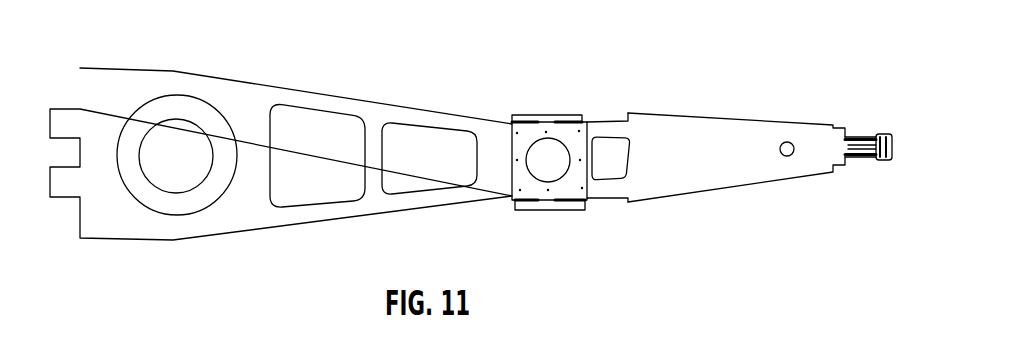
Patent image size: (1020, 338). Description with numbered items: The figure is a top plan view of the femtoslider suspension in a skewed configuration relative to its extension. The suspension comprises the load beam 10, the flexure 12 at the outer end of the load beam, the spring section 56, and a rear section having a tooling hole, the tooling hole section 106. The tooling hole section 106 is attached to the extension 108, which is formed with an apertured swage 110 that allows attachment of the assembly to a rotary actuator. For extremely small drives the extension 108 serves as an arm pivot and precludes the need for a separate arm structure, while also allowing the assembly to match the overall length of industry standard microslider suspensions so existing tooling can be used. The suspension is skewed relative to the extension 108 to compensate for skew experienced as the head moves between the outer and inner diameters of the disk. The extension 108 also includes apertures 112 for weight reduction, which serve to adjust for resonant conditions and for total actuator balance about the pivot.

The load beam 10 is at (727, 102).
The flexure 12 is at (873, 122).
The spring section 56 is at (613, 107).
The tooling hole section 106 is at (551, 148).
The extension 108 is at (350, 77).
The apertured swage 110 is at (193, 137).
The apertures 112 is at (340, 140).